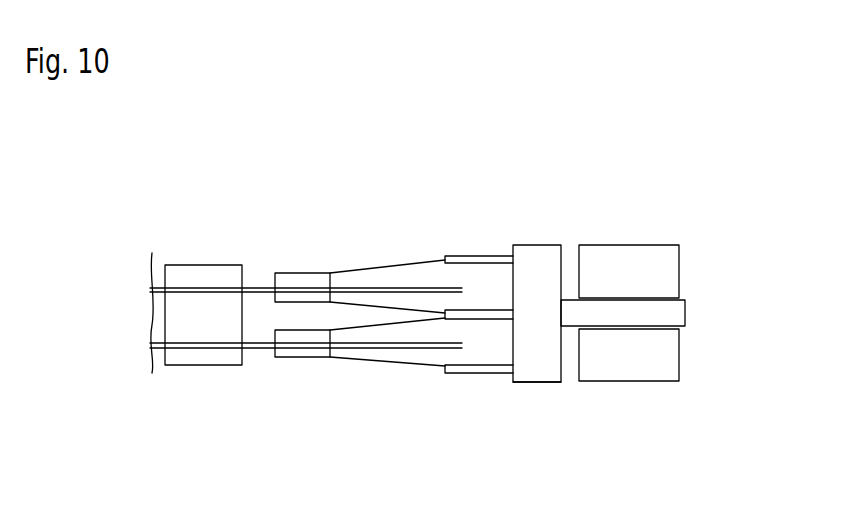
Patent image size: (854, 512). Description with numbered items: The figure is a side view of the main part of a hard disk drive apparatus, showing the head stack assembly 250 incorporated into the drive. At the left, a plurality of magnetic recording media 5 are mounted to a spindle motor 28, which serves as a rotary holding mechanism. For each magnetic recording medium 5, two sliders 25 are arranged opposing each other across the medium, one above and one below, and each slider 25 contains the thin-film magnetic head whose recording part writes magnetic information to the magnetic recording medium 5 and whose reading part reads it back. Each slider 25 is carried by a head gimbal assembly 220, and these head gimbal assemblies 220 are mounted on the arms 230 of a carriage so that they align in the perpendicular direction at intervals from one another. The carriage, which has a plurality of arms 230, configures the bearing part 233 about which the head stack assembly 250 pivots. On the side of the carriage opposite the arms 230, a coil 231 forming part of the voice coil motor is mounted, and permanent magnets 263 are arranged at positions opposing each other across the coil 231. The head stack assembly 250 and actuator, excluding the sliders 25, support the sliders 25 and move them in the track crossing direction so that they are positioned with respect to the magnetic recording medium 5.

The magnetic recording medium 5 is at (255, 270).
The slider 25 is at (266, 273).
The spindle motor 28 is at (186, 270).
The head gimbal assembly 220 is at (378, 268).
The arm 230 is at (455, 256).
The coil 231 is at (677, 312).
The bearing part 233 is at (541, 378).
The head stack assembly 250 is at (542, 225).
The permanent magnet 263 is at (623, 245).